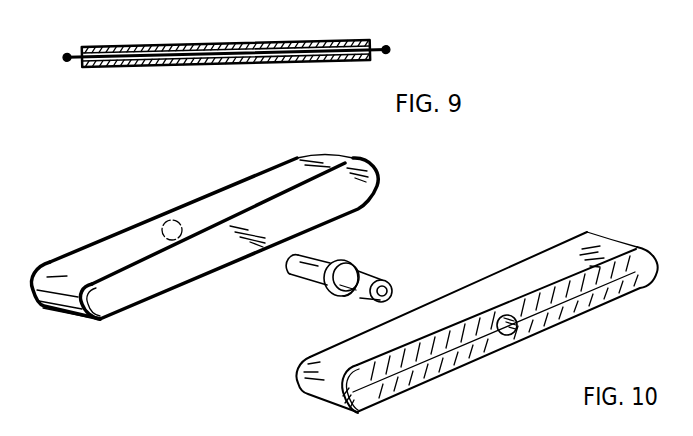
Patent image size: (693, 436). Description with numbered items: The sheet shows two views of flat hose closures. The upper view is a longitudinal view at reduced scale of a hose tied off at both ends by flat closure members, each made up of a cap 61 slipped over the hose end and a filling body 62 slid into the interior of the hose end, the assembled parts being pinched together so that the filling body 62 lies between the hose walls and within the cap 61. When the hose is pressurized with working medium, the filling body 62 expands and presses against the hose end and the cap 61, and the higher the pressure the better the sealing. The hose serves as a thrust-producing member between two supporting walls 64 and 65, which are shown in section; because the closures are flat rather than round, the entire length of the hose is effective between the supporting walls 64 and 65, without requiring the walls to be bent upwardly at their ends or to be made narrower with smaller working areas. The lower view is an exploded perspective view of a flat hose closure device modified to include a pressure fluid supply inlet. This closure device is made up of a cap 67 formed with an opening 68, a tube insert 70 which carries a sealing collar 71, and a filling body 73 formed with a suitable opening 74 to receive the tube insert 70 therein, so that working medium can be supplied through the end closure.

In FIG. 9, the cap 61 is at (63, 62).
In FIG. 9, the filling body 62 is at (392, 48).
In FIG. 9, the supporting wall 64 is at (218, 52).
In FIG. 9, the supporting wall 65 is at (222, 63).
In FIG. 10, the cap 67 is at (110, 248).
In FIG. 10, the opening 68 is at (172, 230).
In FIG. 10, the tube insert 70 is at (362, 280).
In FIG. 10, the sealing collar 71 is at (345, 265).
In FIG. 10, the filling body 73 is at (500, 280).
In FIG. 10, the opening 74 is at (507, 335).